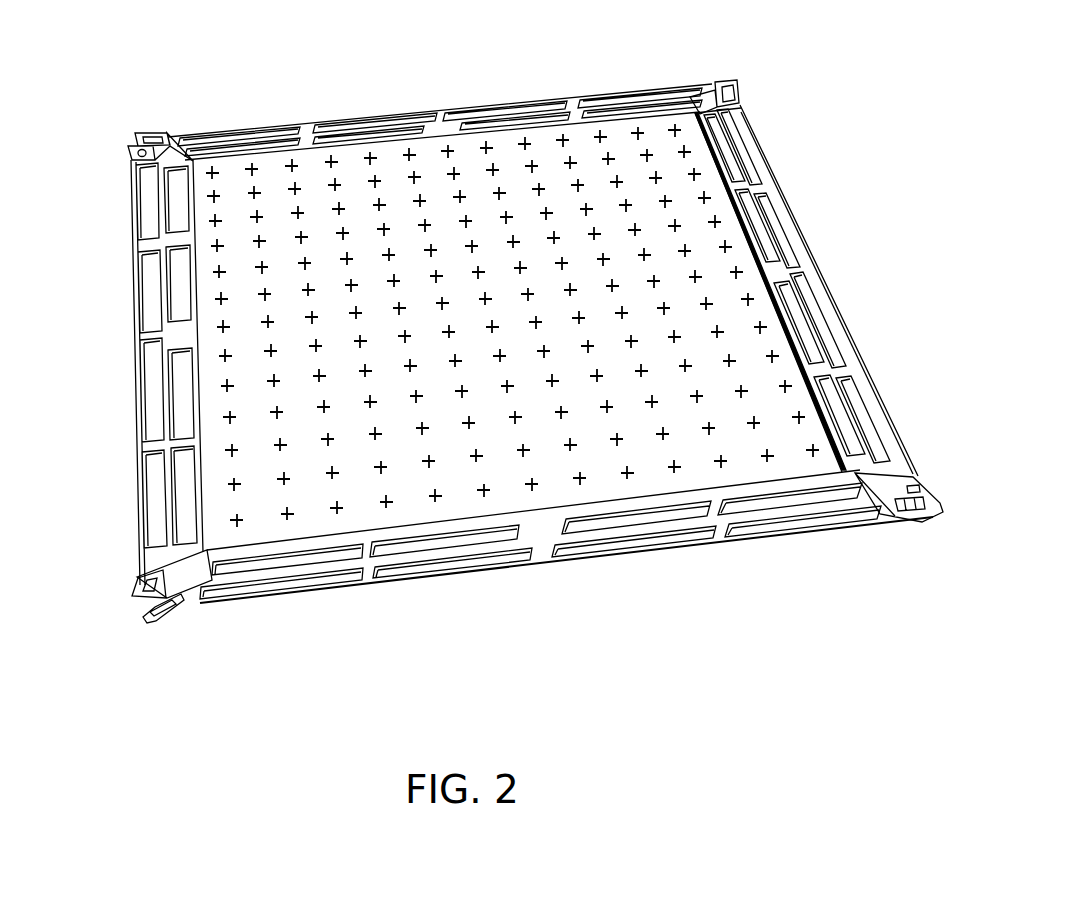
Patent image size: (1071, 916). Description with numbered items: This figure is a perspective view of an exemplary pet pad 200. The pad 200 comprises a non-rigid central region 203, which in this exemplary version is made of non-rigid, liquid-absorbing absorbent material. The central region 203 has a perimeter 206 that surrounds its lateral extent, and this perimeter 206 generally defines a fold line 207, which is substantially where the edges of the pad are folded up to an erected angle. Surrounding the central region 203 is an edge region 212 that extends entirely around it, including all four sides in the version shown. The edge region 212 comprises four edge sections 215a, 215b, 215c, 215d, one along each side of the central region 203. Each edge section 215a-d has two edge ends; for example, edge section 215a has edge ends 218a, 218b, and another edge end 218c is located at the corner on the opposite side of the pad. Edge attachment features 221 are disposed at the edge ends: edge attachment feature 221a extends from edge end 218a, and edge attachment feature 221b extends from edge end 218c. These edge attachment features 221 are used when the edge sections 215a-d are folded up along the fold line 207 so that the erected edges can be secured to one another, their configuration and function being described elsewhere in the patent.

The pad 200 is at (786, 100).
The central region 203 is at (312, 182).
The perimeter 206 is at (757, 468).
The fold line 207 is at (572, 98).
The edge region 212 is at (841, 313).
The edge section 215a is at (572, 543).
The edge section 215b is at (135, 383).
The edge section 215c is at (220, 131).
The edge section 215d is at (915, 380).
The edge end 218a is at (200, 598).
The edge end 218b is at (887, 522).
The edge end 218c is at (135, 553).
The edge attachment feature 221 is at (933, 513).
The edge attachment feature 221a is at (143, 614).
The edge attachment feature 221b is at (128, 592).